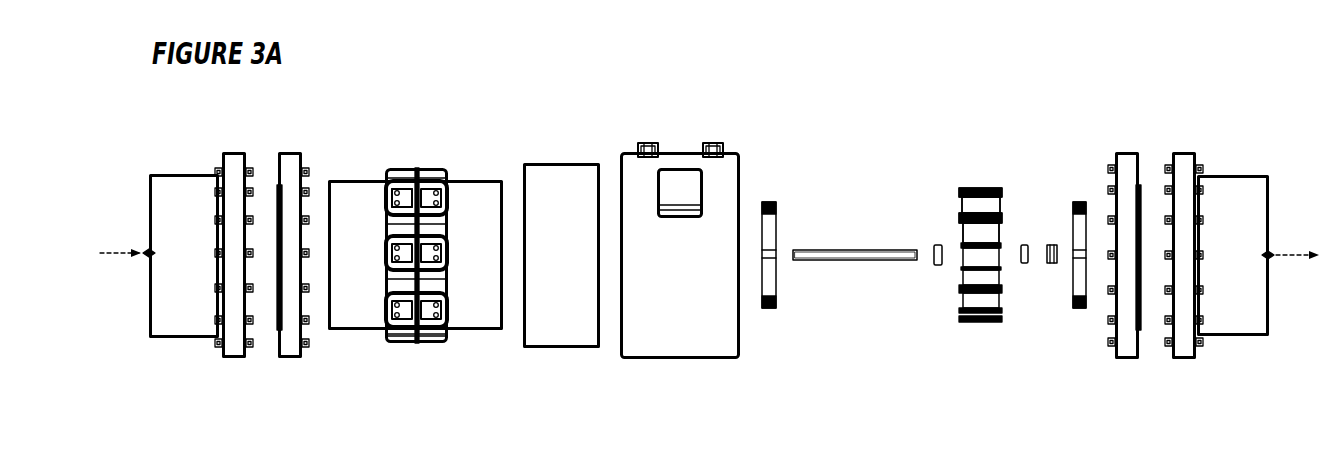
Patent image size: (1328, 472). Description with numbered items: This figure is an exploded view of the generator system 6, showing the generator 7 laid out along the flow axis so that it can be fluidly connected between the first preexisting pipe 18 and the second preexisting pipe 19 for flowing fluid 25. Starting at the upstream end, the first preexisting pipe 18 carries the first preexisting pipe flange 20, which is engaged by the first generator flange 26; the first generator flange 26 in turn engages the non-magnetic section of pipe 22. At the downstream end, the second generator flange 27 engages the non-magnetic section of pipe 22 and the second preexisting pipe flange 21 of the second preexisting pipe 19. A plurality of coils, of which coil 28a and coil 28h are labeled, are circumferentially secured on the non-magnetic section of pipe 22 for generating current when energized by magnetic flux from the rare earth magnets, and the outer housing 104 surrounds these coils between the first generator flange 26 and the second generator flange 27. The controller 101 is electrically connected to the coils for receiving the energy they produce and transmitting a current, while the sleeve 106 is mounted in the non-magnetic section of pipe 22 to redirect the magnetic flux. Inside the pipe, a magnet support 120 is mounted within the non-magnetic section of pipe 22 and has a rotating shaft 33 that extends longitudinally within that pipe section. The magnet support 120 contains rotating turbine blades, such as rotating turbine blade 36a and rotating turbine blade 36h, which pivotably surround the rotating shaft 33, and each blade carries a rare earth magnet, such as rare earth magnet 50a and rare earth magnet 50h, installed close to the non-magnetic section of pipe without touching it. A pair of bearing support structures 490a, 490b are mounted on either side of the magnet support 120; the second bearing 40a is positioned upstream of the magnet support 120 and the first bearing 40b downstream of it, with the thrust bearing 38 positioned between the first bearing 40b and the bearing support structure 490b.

The generator system 6 is at (138, 137).
The generator 7 is at (1058, 96).
The fluid 25 is at (126, 241).
The first preexisting pipe 18 is at (185, 174).
The first preexisting pipe flange 20 is at (232, 153).
The first generator flange 26 is at (293, 153).
The non-magnetic section of pipe 22 is at (481, 180).
The coil 28a is at (428, 169).
The coil 28h is at (384, 196).
The sleeve 106 is at (563, 163).
The outer housing 104 is at (697, 150).
The controller 101 is at (668, 168).
The bearing support structure 490a is at (771, 250).
The rotating shaft 33 is at (858, 250).
The second bearing 40a is at (937, 245).
The magnet support 120 is at (950, 333).
The rare earth magnet 50a is at (989, 181).
The rare earth magnet 50h is at (961, 212).
The rotating turbine blade 36a is at (1000, 206).
The rotating turbine blade 36h is at (994, 232).
The first bearing 40b is at (1025, 245).
The thrust bearing 38 is at (1052, 245).
The bearing support structure 490b is at (1080, 256).
The second generator flange 27 is at (1124, 152).
The second preexisting pipe flange 21 is at (1185, 152).
The second preexisting pipe 19 is at (1237, 175).